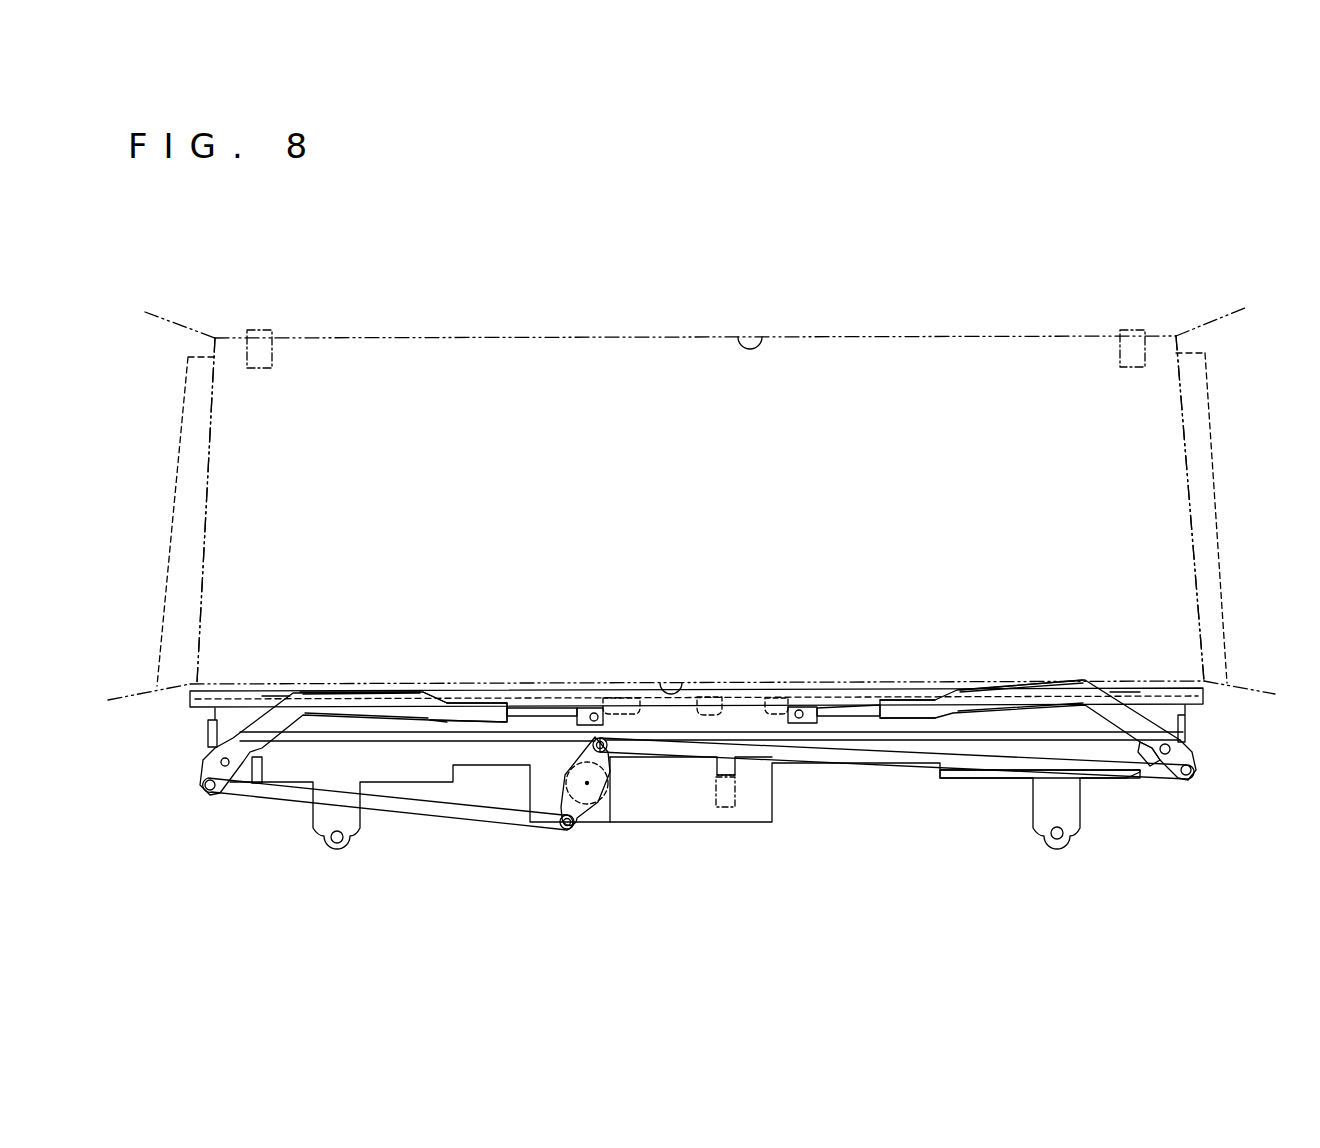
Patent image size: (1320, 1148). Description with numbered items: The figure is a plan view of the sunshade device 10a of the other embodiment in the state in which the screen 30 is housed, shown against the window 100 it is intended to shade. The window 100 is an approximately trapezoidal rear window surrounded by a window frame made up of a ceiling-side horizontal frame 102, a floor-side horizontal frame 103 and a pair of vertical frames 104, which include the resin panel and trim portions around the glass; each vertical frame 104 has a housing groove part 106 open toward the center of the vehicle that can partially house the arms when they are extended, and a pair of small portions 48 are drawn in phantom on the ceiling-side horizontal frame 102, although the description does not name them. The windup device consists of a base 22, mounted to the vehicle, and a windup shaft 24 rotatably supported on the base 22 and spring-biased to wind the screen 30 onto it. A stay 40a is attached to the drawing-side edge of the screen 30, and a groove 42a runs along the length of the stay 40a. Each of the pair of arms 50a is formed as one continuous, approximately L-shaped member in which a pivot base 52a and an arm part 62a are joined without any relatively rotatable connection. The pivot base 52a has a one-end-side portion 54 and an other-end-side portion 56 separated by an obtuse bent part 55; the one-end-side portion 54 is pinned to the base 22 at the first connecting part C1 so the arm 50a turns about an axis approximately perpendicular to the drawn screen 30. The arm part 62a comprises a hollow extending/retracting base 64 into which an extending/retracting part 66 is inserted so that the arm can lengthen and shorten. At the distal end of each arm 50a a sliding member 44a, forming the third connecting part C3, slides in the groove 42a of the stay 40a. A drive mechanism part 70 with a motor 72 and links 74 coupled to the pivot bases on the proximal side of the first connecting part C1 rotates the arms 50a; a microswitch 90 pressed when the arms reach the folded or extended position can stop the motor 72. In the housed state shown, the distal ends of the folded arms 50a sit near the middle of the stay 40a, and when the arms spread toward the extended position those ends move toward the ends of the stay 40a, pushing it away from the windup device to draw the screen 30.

The sunshade device 10a is at (384, 835).
The base 22 is at (987, 780).
The windup shaft 24 is at (1185, 752).
The screen 30 is at (1186, 710).
The stay 40a is at (216, 687).
The groove 42a is at (722, 696).
The sliding member 44a is at (636, 690).
The attachment portion 48 is at (258, 330).
The arm 50a is at (408, 688).
The pivot base 52a is at (272, 696).
The one-end-side portion 54 is at (260, 760).
The bent part 55 is at (303, 688).
The other-end-side portion 56 is at (362, 689).
The arm part 62a is at (500, 690).
The extending/retracting base 64 is at (468, 688).
The extending/retracting part 66 is at (545, 689).
The drive mechanism part 70 is at (568, 833).
The motor 72 is at (607, 812).
The links 74 is at (450, 816).
The microswitch 90 is at (712, 796).
The window 100 is at (858, 347).
The ceiling-side horizontal frame 102 is at (763, 337).
The floor-side horizontal frame 103 is at (684, 680).
The vertical frame 104 is at (200, 450).
The housing groove part 106 is at (180, 417).
The first connecting part C1 is at (215, 757).
The third connecting part C3 is at (595, 690).